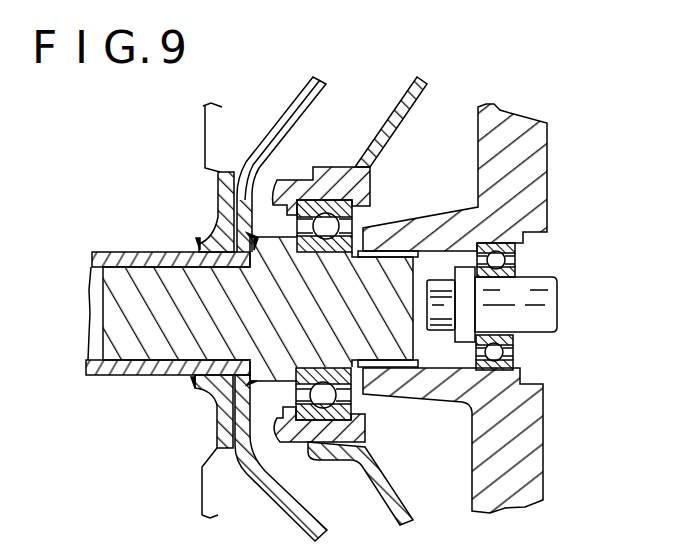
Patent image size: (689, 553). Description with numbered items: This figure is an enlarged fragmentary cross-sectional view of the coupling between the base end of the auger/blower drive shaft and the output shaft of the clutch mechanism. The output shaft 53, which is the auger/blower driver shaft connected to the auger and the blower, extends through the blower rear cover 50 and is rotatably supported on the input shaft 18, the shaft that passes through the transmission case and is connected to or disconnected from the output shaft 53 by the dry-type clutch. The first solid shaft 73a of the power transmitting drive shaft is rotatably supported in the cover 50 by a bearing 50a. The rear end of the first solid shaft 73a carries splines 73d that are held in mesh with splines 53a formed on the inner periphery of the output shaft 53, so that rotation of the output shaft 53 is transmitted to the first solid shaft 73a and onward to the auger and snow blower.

The input shaft 18 is at (546, 288).
The blower rear cover 50 is at (386, 134).
The bearing 50a is at (306, 412).
The output shaft 53 is at (443, 227).
The splines 53a is at (393, 252).
The first solid shaft 73a is at (173, 333).
The splines 73d is at (368, 259).